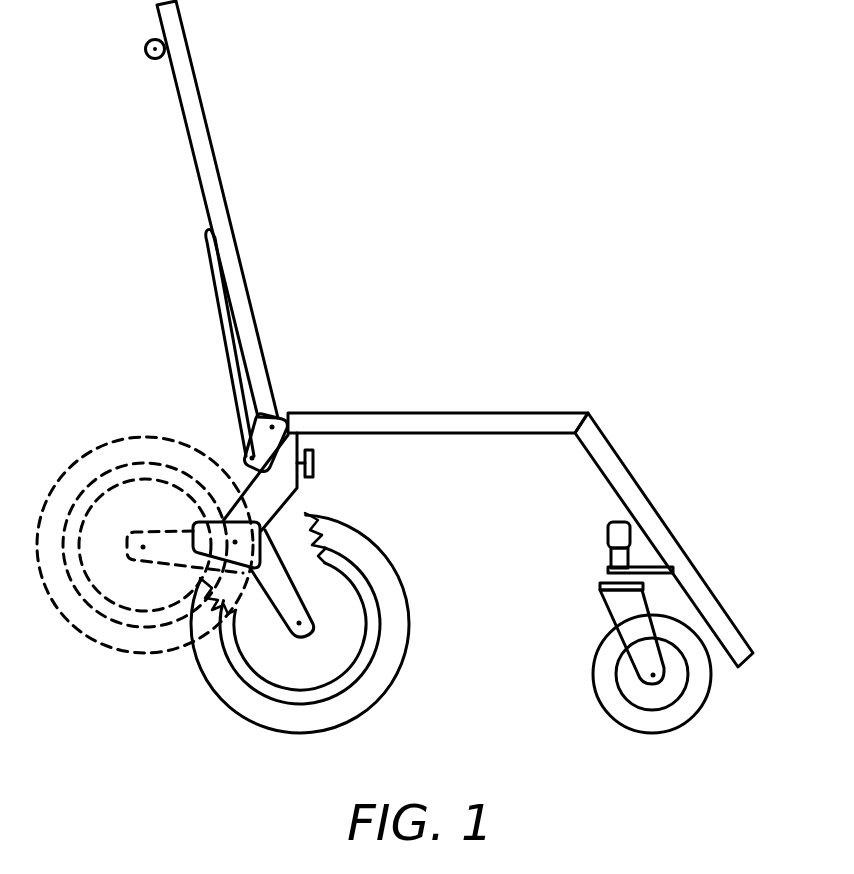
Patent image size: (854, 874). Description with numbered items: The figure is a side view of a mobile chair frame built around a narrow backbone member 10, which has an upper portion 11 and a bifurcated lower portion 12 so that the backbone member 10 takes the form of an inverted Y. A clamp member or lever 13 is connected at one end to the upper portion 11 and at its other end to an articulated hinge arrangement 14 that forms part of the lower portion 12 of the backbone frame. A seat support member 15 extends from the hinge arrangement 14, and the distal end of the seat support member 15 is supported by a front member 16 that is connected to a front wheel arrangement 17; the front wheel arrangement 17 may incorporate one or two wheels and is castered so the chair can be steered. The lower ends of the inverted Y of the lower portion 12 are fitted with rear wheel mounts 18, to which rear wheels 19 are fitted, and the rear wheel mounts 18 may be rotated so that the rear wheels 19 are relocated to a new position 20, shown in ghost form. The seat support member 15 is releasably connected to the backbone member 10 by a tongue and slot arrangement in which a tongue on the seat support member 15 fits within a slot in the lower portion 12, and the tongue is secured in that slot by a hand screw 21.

The backbone member 10 is at (150, 203).
The upper portion 11 is at (195, 83).
The lower portion 12 is at (208, 444).
The clamp member or lever 13 is at (215, 290).
The articulated hinge arrangement 14 is at (295, 413).
The seat support member 15 is at (440, 416).
The front member 16 is at (613, 465).
The front wheel arrangement 17 is at (598, 625).
The rear wheel mounts 18 is at (202, 552).
The rear wheels 19 is at (232, 698).
The new position 20 is at (80, 620).
The hand screw 21 is at (313, 463).